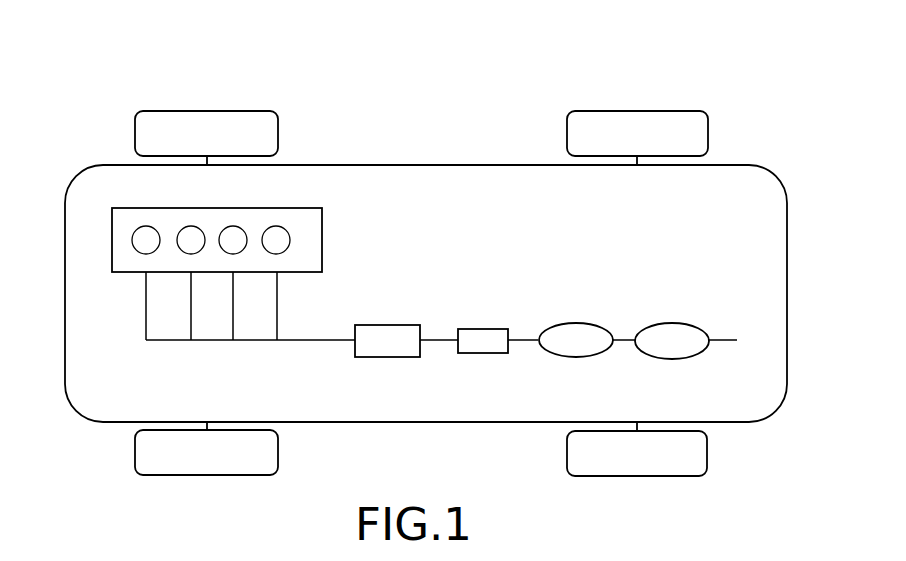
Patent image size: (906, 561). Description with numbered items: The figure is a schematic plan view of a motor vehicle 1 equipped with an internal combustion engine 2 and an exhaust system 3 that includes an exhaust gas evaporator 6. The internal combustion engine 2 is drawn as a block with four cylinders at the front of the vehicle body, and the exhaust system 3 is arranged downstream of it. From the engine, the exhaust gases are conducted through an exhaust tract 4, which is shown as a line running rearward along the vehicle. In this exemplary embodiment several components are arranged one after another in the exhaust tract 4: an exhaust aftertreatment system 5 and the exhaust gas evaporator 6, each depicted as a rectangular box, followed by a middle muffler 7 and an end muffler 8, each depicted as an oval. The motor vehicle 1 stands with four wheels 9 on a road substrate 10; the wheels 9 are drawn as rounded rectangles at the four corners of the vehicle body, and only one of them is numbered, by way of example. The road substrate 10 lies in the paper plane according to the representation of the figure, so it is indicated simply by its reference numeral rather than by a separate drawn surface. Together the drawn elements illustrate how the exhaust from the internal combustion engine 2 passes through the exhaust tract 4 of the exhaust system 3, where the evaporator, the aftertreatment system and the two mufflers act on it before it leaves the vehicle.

The motor vehicle 1 is at (424, 104).
The internal combustion engine 2 is at (312, 224).
The exhaust system 3 is at (129, 354).
The exhaust tract 4 is at (313, 341).
The exhaust aftertreatment system 5 is at (395, 325).
The exhaust gas evaporator 6 is at (480, 329).
The middle muffler 7 is at (573, 324).
The end muffler 8 is at (680, 325).
The wheels 9 is at (195, 121).
The road substrate 10 is at (524, 106).